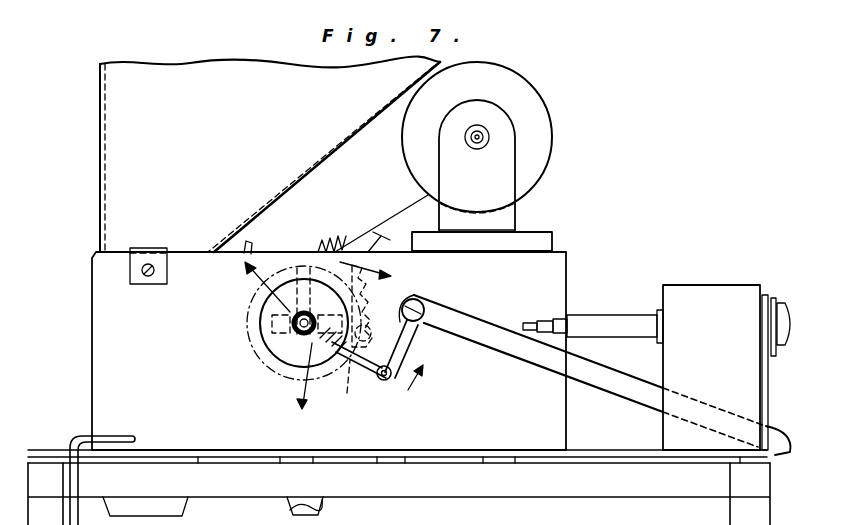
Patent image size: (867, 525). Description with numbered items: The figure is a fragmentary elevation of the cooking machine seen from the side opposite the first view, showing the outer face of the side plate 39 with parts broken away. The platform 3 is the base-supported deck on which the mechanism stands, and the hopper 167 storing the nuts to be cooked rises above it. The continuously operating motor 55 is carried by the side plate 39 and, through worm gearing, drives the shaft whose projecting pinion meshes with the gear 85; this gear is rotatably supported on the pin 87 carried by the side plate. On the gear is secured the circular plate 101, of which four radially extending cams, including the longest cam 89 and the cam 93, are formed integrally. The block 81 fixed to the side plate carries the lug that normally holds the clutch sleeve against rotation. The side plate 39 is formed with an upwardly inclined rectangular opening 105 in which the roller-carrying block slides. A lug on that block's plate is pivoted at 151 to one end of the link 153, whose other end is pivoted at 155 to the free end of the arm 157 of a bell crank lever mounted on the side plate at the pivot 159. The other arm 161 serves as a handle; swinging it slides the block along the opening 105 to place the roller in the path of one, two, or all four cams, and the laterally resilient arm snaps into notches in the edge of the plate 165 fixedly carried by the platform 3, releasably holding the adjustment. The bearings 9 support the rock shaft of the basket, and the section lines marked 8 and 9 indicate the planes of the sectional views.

The platform 3 is at (510, 447).
The section line 8- 8 is at (315, 341).
The bearings 9 is at (355, 341).
The side plate 39 is at (92, 334).
The motor 55 is at (553, 153).
The block 81 is at (396, 285).
The gear 85 is at (272, 372).
The pin 87 is at (268, 347).
The cam 89 is at (303, 268).
The cam 93 is at (272, 332).
The circular plate 101 is at (268, 366).
The rectangular opening 105 is at (345, 362).
The pivot 151 is at (347, 395).
The link 153 is at (354, 388).
The pivotal connection 155 is at (384, 383).
The arm 157 is at (394, 340).
The pivot 159 is at (427, 306).
The arm 161 is at (505, 360).
The plate 165 is at (765, 370).
The hopper 167 is at (118, 146).